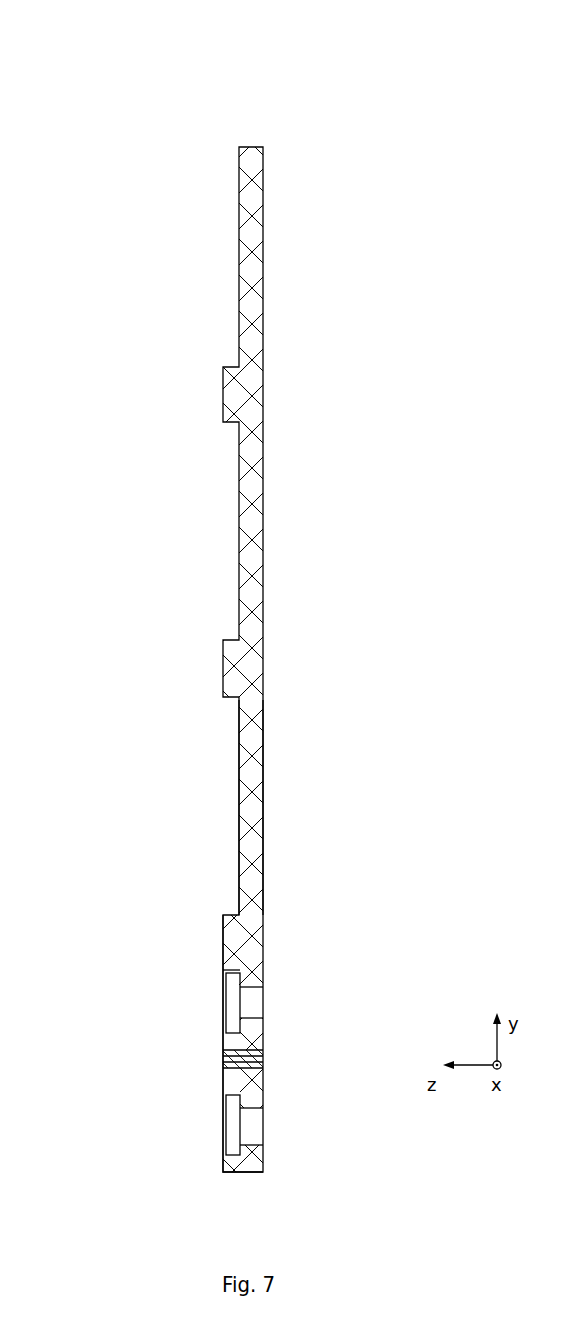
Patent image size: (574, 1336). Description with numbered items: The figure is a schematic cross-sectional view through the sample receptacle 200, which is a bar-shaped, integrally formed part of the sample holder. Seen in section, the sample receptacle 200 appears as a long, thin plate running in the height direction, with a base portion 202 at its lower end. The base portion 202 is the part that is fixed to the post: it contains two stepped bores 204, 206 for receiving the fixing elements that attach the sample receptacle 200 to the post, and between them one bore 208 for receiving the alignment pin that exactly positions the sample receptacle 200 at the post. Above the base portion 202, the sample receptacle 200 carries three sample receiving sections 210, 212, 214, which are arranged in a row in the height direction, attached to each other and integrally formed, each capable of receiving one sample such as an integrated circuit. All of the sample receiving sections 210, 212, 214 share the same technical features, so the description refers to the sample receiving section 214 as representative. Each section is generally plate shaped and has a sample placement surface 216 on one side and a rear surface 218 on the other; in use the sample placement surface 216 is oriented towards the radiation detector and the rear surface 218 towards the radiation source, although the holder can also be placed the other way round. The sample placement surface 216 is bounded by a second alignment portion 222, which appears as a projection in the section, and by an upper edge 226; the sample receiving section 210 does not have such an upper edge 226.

The sample receptacle 200 is at (230, 95).
The base portion 202 is at (213, 952).
The stepped bore 204 is at (223, 1003).
The stepped bore 206 is at (224, 1135).
The bore 208 is at (224, 1064).
The sample receiving section 210 is at (263, 257).
The sample receiving section 212 is at (263, 525).
The sample receiving section 214 is at (272, 787).
The sample placement surface 216 is at (240, 813).
The rear surface 218 is at (263, 845).
The second alignment portion 222 is at (225, 914).
The upper edge 226 is at (229, 699).